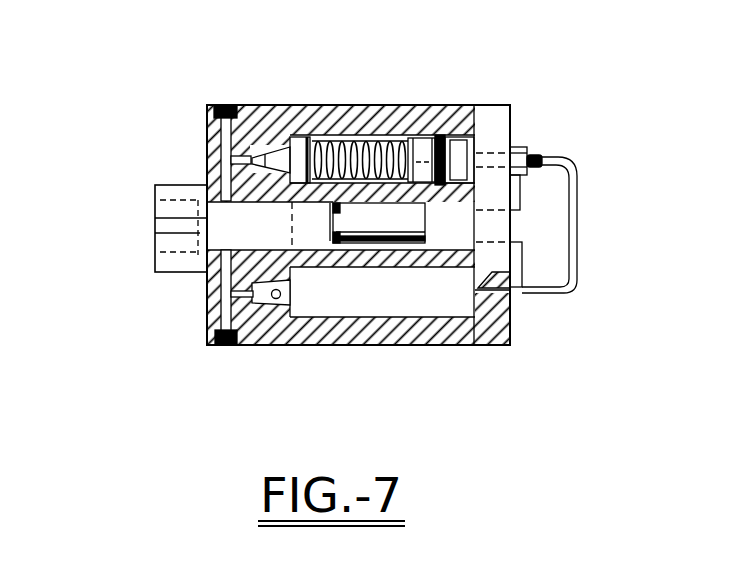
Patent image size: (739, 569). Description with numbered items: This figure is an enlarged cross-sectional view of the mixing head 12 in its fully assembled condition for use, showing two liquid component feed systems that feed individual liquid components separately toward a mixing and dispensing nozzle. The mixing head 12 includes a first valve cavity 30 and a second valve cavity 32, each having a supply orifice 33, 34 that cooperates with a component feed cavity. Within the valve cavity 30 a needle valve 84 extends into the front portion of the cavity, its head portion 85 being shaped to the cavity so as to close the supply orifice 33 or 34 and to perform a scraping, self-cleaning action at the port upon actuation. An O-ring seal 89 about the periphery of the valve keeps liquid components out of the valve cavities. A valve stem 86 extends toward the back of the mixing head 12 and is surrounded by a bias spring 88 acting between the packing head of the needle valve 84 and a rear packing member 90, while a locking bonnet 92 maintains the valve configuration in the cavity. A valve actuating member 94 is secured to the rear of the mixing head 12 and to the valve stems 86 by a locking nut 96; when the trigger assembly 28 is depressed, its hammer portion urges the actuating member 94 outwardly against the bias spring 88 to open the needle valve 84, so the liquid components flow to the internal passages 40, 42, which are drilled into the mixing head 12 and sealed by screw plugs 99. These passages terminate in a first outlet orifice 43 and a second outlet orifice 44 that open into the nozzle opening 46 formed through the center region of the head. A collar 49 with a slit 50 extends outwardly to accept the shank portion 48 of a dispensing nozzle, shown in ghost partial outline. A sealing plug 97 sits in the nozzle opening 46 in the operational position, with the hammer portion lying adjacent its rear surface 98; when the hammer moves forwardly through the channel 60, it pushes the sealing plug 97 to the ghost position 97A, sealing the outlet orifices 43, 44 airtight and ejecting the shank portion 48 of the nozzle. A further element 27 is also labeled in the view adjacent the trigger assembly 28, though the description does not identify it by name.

The mixing head 12 is at (428, 345).
The passage 27 is at (478, 233).
The trigger assembly 28 is at (580, 234).
The first valve cavity 30 is at (375, 108).
The second valve cavity 32 is at (352, 307).
The supply orifice 33 is at (255, 135).
The supply orifice 34 is at (278, 298).
The internal passage 40 is at (222, 143).
The internal passage 42 is at (222, 322).
The first outlet orifice 43 is at (235, 202).
The second outlet orifice 44 is at (250, 240).
The nozzle opening 46 is at (207, 282).
The shank portion 48 is at (313, 232).
The collar 49 is at (163, 184).
The slit 50 is at (167, 223).
The channel 60 is at (463, 230).
The needle valve 84 is at (276, 110).
The head portion 85 is at (265, 145).
The valve stem 86 is at (372, 140).
The bias spring 88 is at (342, 140).
The O-ring seal 89 is at (320, 136).
The rear packing member 90 is at (437, 134).
The locking bonnet 92 is at (458, 134).
The valve actuating member 94 is at (511, 112).
The locking nut 96 is at (523, 146).
The sealing plug 97 is at (366, 230).
The sealing plug ghost position 97A is at (155, 238).
The rear surface 98 is at (428, 228).
The screw plug 99 is at (223, 106).